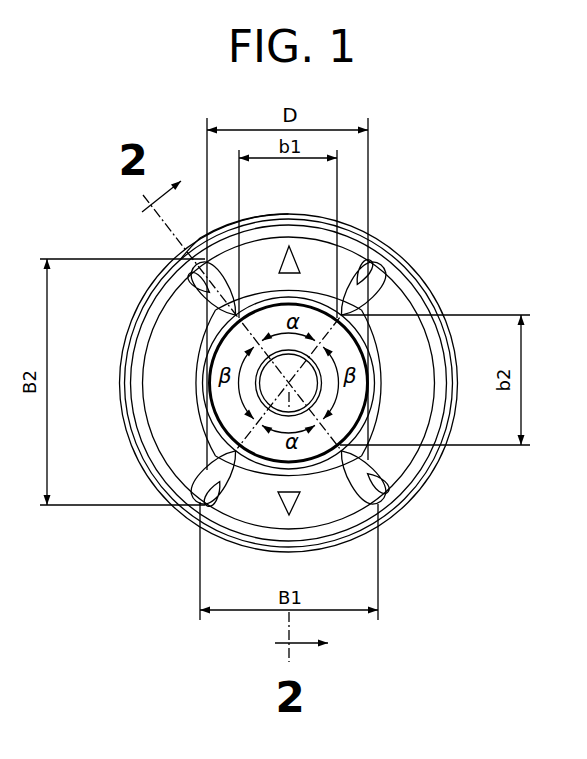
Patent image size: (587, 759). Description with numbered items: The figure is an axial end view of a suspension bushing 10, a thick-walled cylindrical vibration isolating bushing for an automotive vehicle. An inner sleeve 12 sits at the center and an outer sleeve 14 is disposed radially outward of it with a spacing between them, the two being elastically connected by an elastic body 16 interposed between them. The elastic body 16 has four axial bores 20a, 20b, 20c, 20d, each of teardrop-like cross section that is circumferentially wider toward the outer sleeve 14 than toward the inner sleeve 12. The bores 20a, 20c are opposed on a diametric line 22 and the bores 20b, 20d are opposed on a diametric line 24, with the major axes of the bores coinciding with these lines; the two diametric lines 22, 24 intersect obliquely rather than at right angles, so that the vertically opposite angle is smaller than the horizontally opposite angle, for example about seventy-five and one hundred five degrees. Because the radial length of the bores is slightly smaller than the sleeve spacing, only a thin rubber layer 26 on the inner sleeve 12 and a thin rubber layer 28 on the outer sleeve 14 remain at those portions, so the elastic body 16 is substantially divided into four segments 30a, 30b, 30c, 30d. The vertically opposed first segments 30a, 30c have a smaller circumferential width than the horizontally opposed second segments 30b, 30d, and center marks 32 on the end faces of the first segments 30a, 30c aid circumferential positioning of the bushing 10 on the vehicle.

The suspension bushing 10 is at (414, 167).
The inner sleeve 12 is at (235, 403).
The outer sleeve 14 is at (437, 460).
The elastic body 16 is at (146, 320).
The axial bore 20a is at (200, 272).
The axial bore 20b is at (388, 270).
The axial bore 20c is at (340, 447).
The axial bore 20d is at (205, 493).
The diametric line 22 is at (192, 251).
The diametric line 24 is at (390, 240).
The thin rubber layer 26 is at (212, 498).
The thin rubber layer 28 is at (410, 284).
The first segment 30a is at (310, 252).
The second segment 30b is at (413, 408).
The first segment 30c is at (343, 507).
The second segment 30d is at (155, 347).
The center mark 32 is at (288, 246).